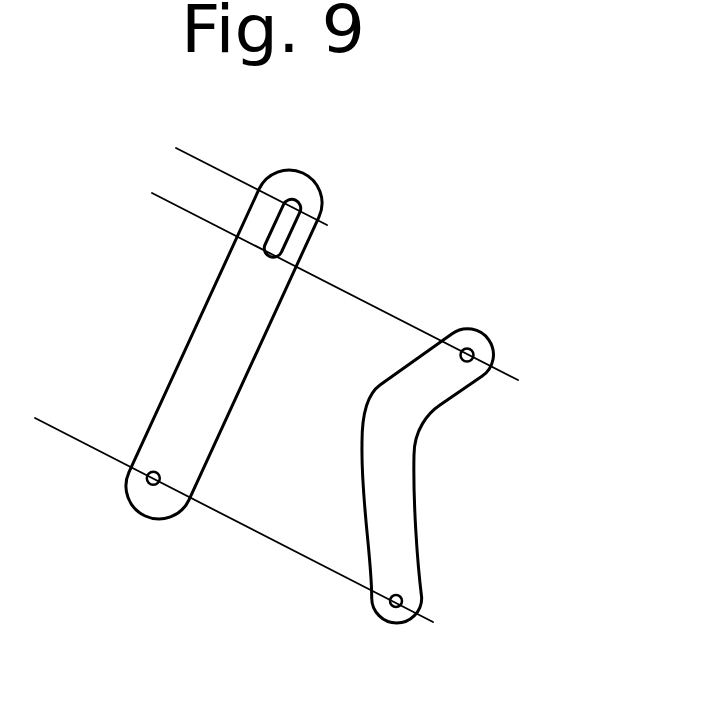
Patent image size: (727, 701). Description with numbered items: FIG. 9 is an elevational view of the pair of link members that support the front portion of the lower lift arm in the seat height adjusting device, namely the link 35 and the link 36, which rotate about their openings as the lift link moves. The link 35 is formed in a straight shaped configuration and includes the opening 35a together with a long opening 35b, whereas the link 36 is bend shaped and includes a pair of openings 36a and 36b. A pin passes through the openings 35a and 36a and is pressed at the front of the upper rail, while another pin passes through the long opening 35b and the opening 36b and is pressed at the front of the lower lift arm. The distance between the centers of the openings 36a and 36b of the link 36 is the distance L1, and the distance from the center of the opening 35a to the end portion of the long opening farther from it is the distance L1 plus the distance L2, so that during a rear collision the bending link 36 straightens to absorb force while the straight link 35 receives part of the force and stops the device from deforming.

The link 35 is at (230, 367).
The opening 35a is at (153, 485).
The long opening 35b is at (301, 200).
The link 36 is at (405, 493).
The opening 36a is at (403, 598).
The opening 36b is at (475, 351).
The distance L1 is at (175, 205).
The distance L2 is at (198, 159).